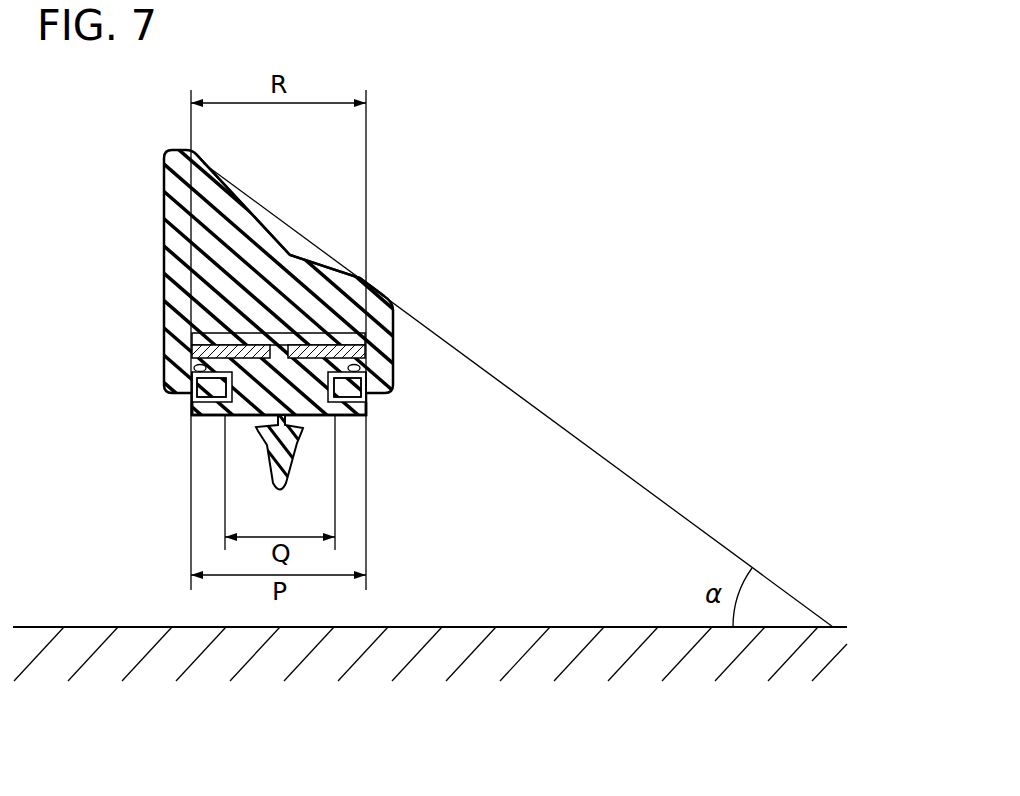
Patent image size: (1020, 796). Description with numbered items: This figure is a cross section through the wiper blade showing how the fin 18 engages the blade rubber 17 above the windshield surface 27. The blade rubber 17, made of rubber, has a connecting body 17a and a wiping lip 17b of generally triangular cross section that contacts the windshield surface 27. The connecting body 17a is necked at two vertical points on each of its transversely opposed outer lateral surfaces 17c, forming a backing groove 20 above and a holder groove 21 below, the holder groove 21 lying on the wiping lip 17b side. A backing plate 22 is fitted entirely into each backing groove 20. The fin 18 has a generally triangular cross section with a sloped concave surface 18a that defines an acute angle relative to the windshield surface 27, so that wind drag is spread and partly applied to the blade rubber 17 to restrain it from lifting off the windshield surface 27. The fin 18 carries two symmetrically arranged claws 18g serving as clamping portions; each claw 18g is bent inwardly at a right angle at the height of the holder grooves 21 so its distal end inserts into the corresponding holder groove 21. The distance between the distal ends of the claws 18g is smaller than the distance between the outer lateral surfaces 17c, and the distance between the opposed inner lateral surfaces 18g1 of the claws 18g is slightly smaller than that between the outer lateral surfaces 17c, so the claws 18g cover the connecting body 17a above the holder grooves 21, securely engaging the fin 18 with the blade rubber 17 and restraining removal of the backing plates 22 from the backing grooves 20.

The blade rubber 17 is at (202, 416).
The connecting body 17a is at (192, 404).
The wiping lip 17b is at (269, 451).
The outer lateral surfaces 17c is at (367, 405).
The fin 18 is at (184, 149).
The sloped concave surface 18a is at (289, 254).
The claws 18g is at (190, 350).
The inner lateral surfaces 18g1 is at (192, 376).
The backing groove 20 is at (190, 357).
The holder groove 21 is at (192, 400).
The backing plate 22 is at (190, 339).
The windshield surface 27 is at (517, 627).